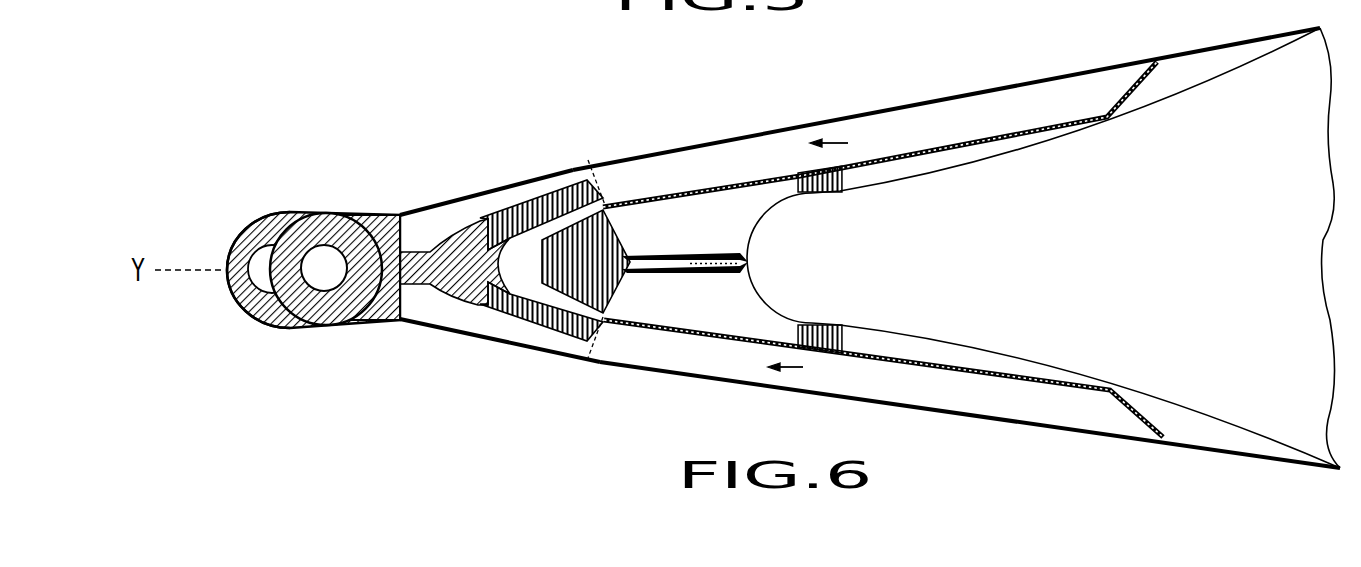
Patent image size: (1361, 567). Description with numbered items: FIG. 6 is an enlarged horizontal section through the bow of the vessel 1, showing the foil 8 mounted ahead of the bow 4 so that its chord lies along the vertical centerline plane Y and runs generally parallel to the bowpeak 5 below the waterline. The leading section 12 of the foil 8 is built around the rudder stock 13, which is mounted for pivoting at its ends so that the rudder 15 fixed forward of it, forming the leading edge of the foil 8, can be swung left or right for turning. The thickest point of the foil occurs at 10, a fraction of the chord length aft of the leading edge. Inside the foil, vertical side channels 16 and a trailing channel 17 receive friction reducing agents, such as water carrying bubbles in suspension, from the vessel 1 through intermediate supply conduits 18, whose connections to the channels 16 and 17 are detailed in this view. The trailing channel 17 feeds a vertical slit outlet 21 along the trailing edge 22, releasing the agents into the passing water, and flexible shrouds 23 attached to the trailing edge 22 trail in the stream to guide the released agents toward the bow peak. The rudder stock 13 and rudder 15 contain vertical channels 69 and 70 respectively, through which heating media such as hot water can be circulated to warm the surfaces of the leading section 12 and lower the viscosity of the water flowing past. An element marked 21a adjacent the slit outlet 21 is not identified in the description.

The vessel 1 is at (1235, 67).
The bow 4 is at (858, 278).
The bowpeak 5 is at (753, 290).
The foil 8 is at (382, 213).
The thickest point of the foil 10 is at (327, 328).
The leading section 12 is at (312, 213).
The rudder stock 13 is at (297, 224).
The rudder 15 is at (234, 294).
The vertical side channels 16 is at (428, 222).
The trailing channel 17 is at (513, 282).
The intermediate supply conduits 18 is at (569, 210).
The vertical slit outlet 21 is at (646, 251).
The tube tip insert 21a is at (597, 263).
The trailing edge 22 is at (628, 272).
The shrouds 23 is at (726, 252).
The rudder stock channel 69 is at (316, 289).
The rudder channel 70 is at (261, 284).